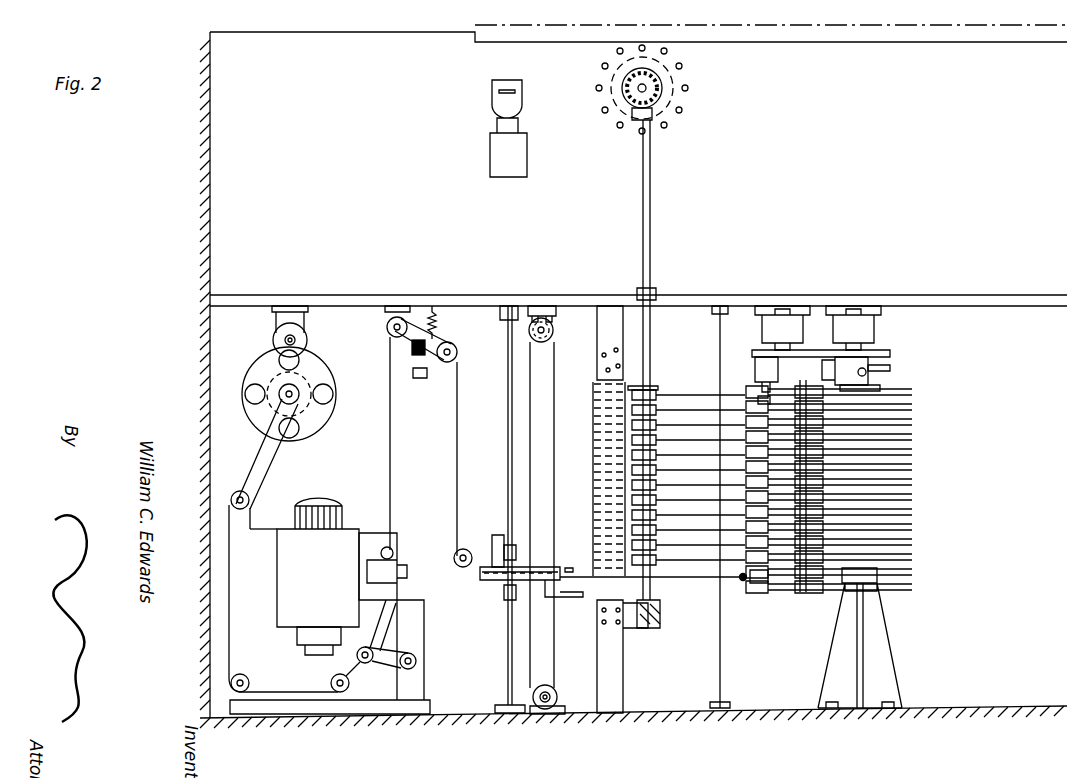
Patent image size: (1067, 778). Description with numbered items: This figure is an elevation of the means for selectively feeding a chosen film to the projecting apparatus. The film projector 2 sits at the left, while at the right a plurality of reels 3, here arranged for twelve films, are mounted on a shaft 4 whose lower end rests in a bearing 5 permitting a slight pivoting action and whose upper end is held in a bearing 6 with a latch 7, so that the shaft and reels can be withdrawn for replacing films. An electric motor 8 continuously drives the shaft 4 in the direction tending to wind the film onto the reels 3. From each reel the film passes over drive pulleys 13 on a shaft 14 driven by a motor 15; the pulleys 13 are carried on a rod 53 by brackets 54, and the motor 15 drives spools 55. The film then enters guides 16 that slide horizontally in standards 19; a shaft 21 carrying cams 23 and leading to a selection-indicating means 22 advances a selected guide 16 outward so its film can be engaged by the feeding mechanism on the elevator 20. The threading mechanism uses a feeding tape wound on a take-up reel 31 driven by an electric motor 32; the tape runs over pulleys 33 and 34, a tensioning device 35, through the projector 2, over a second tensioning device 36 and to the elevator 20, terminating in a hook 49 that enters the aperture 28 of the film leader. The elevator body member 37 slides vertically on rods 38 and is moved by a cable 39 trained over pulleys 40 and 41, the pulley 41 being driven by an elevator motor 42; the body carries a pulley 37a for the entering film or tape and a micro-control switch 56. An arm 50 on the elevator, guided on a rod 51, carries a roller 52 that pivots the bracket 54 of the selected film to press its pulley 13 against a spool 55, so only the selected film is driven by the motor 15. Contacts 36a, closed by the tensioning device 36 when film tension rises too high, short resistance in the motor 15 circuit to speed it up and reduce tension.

The film projector 2 is at (288, 579).
The reels 3 is at (914, 398).
The shaft 4 is at (872, 392).
The bearing 5 is at (878, 581).
The bearing 6 is at (836, 372).
The latch 7 is at (866, 376).
The electric motor 8 is at (876, 331).
The drive pulleys 13 is at (801, 566).
The shaft 14 is at (790, 352).
The motor 15 is at (766, 331).
The guides 16 is at (636, 392).
The standards 19 is at (597, 365).
The elevator 20 is at (487, 584).
The shaft 21 is at (652, 352).
The selection-indicating means 22 is at (664, 64).
The cams 23 is at (657, 410).
The aperture 28 is at (590, 448).
The take-up reel 31 is at (319, 378).
The electric motor 32 is at (278, 337).
The pulley 33 is at (250, 500).
The pulley 34 is at (246, 677).
The tensioning device 35 is at (361, 671).
The second tensioning device 36 is at (449, 346).
The electric contacts 36a is at (414, 373).
The body member 37 is at (541, 566).
The pulley 37a is at (458, 556).
The rods 38 is at (508, 489).
The cable 39 is at (533, 460).
The pulley 40 is at (556, 693).
The pulley 41 is at (553, 333).
The elevator motor 42 is at (541, 306).
The hook 49 is at (568, 568).
The arm 50 is at (695, 581).
The rod 51 is at (724, 625).
The roller 52 is at (742, 582).
The rod 53 is at (758, 381).
The brackets 54 is at (758, 400).
The spools 55 is at (758, 586).
The micro-control switch 56 is at (495, 537).